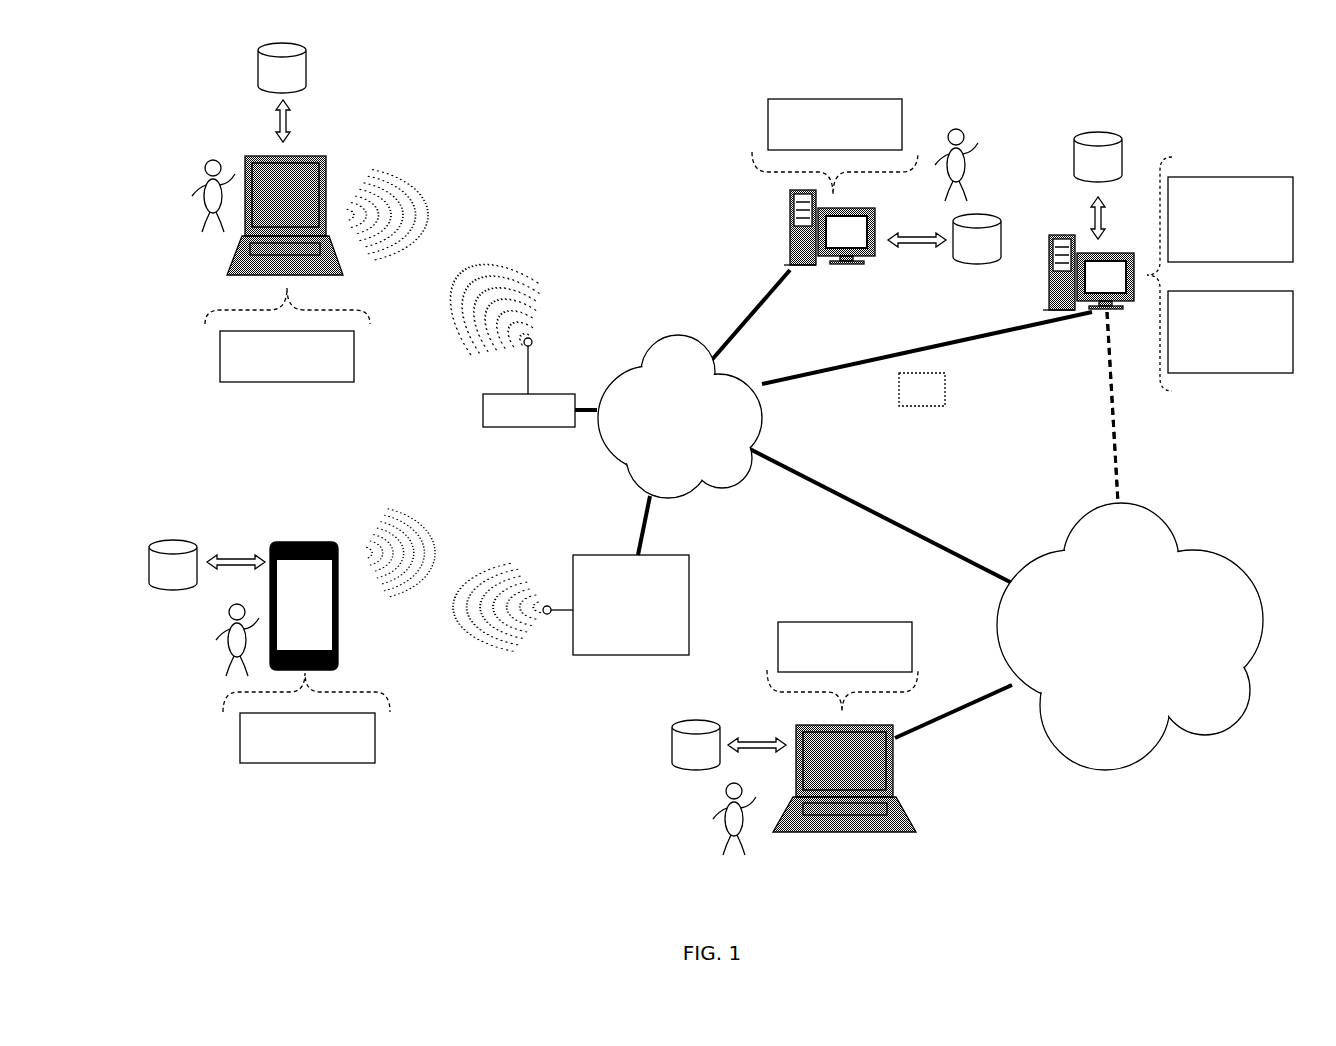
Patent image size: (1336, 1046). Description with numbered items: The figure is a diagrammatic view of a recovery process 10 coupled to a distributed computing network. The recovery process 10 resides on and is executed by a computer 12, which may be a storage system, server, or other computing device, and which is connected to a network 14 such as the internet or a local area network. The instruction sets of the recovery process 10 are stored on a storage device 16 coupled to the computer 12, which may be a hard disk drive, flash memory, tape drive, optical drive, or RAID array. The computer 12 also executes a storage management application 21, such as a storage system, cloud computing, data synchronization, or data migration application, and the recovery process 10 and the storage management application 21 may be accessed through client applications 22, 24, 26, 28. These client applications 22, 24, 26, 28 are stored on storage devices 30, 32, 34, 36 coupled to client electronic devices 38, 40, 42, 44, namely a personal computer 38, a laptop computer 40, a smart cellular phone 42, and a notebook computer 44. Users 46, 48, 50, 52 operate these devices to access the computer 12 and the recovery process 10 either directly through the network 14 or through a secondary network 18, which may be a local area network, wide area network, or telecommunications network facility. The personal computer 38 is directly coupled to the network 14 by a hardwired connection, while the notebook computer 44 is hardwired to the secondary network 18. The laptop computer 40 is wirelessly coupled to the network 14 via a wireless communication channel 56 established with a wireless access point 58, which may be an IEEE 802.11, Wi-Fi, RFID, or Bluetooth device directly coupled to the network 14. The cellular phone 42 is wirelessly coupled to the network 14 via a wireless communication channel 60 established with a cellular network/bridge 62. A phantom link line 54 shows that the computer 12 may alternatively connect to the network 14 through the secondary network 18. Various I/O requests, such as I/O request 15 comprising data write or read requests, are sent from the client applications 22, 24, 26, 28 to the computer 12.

The recovery process 10 is at (1293, 211).
The computer 12 is at (1050, 251).
The network 14 is at (833, 426).
The I/O request 15 is at (900, 389).
The storage device 16 is at (1098, 157).
The secondary network 18 is at (1079, 541).
The storage management application 21 is at (1293, 324).
The client application 22 is at (902, 129).
The client application 24 is at (354, 366).
The client application 26 is at (375, 728).
The client application 28 is at (912, 645).
The storage device 30 is at (977, 239).
The storage device 32 is at (282, 68).
The storage device 34 is at (173, 565).
The storage device 36 is at (696, 745).
The client electronic device 38 is at (780, 215).
The client electronic device 40 is at (323, 182).
The client electronic device 42 is at (344, 591).
The client electronic device 44 is at (895, 771).
The user 46 is at (975, 145).
The user 48 is at (178, 187).
The user 50 is at (213, 618).
The user 52 is at (700, 810).
The phantom link line 54 is at (1085, 382).
The wireless communication channel 56 is at (468, 232).
The wireless access point (WAP) 58 is at (478, 410).
The wireless communication channel 60 is at (458, 555).
The cellular network/bridge 62 is at (689, 572).